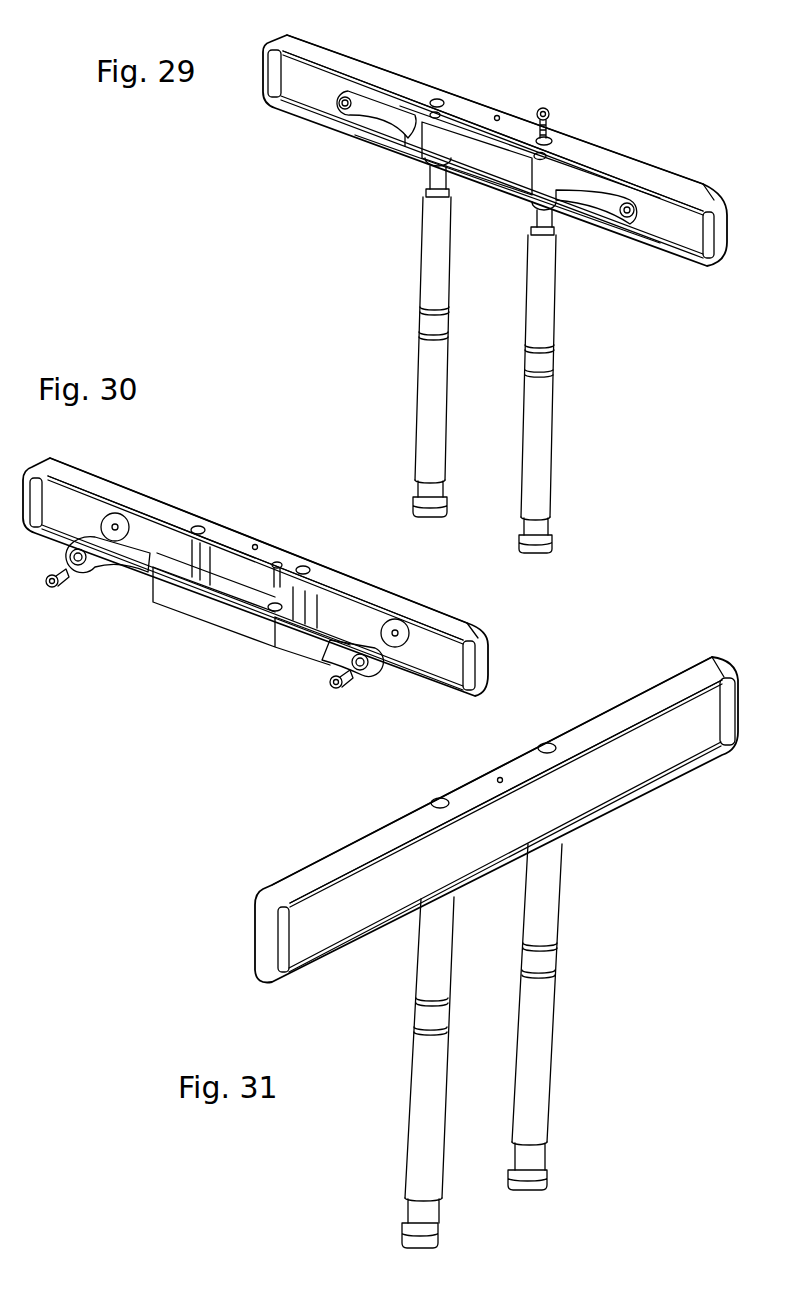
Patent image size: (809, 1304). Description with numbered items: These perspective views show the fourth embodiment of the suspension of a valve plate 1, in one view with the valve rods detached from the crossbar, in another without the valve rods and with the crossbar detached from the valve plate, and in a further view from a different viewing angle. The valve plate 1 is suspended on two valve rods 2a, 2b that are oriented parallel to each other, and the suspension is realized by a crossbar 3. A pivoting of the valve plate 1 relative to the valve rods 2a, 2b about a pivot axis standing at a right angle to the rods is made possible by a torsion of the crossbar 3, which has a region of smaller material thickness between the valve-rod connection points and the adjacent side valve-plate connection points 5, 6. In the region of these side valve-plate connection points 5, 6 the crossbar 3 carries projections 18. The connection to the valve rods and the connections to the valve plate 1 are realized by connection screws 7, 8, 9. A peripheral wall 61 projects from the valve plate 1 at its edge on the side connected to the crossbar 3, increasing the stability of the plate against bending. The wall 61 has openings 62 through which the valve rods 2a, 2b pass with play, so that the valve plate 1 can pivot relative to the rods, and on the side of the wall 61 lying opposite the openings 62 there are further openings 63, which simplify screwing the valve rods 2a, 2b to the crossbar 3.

In FIG. 29, the valve plate 1 is at (658, 145).
In FIG. 30, the valve plate 1 is at (416, 579).
In FIG. 31, the valve plate 1 is at (335, 971).
In FIG. 29, the valve rod 2a is at (409, 367).
In FIG. 31, the valve rod 2a is at (564, 1025).
In FIG. 29, the valve rod 2b is at (566, 402).
In FIG. 31, the valve rod 2b is at (403, 1094).
In FIG. 29, the crossbar 3 is at (471, 184).
In FIG. 30, the crossbar 3 is at (176, 632).
In FIG. 29, the side valve-plate connection point 5 is at (328, 105).
In FIG. 29, the side valve-plate connection point 6 is at (647, 231).
In FIG. 29, the connection screw 7 is at (548, 110).
In FIG. 30, the connection screw 8 is at (47, 588).
In FIG. 30, the connection screw 9 is at (327, 687).
In FIG. 30, the projection 18 is at (365, 652).
In FIG. 29, the peripheral wall 61 is at (298, 110).
In FIG. 30, the peripheral wall 61 is at (415, 673).
In FIG. 31, the peripheral wall 61 is at (345, 856).
In FIG. 29, the opening 62 is at (555, 220).
In FIG. 29, the opening 63 is at (548, 140).
In FIG. 30, the opening 63 is at (305, 567).
In FIG. 31, the opening 63 is at (548, 742).